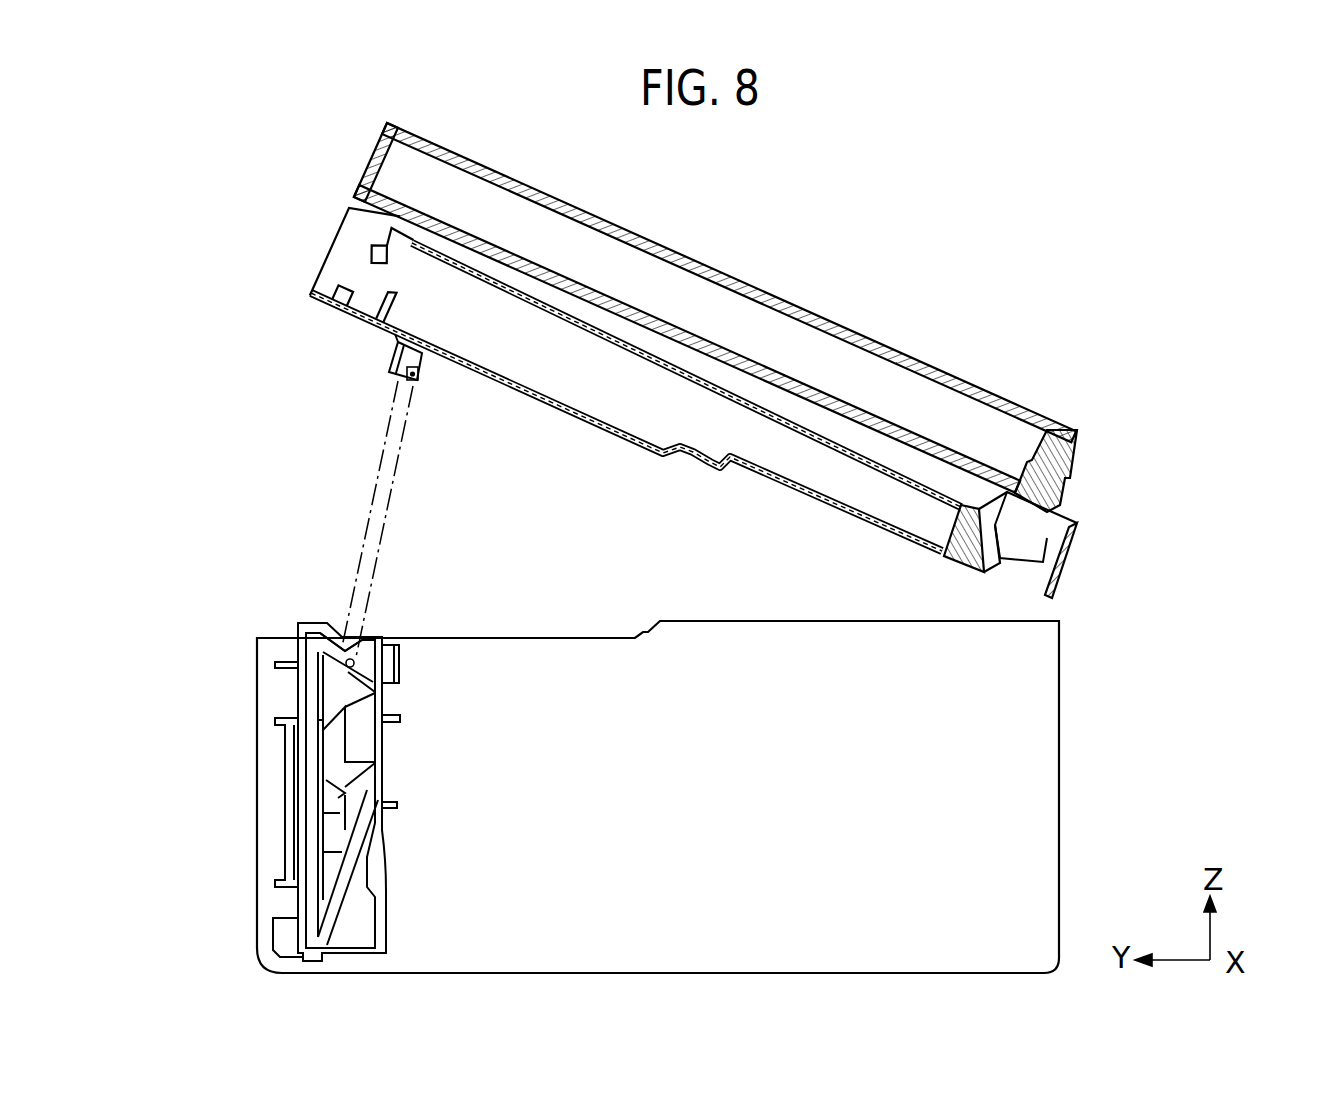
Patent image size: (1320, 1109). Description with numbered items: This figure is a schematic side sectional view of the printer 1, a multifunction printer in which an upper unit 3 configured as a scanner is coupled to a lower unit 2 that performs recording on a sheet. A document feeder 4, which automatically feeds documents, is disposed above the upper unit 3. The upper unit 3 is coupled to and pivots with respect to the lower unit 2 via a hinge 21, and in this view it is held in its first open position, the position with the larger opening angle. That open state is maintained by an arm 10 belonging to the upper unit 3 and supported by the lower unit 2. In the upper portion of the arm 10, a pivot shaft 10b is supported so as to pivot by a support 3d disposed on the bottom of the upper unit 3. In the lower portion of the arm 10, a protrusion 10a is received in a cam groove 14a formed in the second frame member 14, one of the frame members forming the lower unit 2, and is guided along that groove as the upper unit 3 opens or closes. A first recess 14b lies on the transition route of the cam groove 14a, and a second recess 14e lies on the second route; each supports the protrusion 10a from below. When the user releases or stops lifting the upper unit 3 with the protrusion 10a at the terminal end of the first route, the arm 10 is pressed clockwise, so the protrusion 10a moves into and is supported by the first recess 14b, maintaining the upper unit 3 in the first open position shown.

The printer 1 is at (1083, 393).
The lower unit 2 is at (1068, 755).
The upper unit 3 is at (1078, 544).
The support 3d is at (397, 364).
The document feeder 4 is at (972, 375).
The arm 10 is at (360, 546).
The protrusion 10a is at (360, 673).
The pivot shaft 10b is at (416, 382).
The second frame member 14 is at (298, 698).
The cam groove 14a is at (313, 740).
The first recess 14b is at (342, 645).
The second recess 14e is at (343, 787).
The hinge 21 is at (1017, 540).